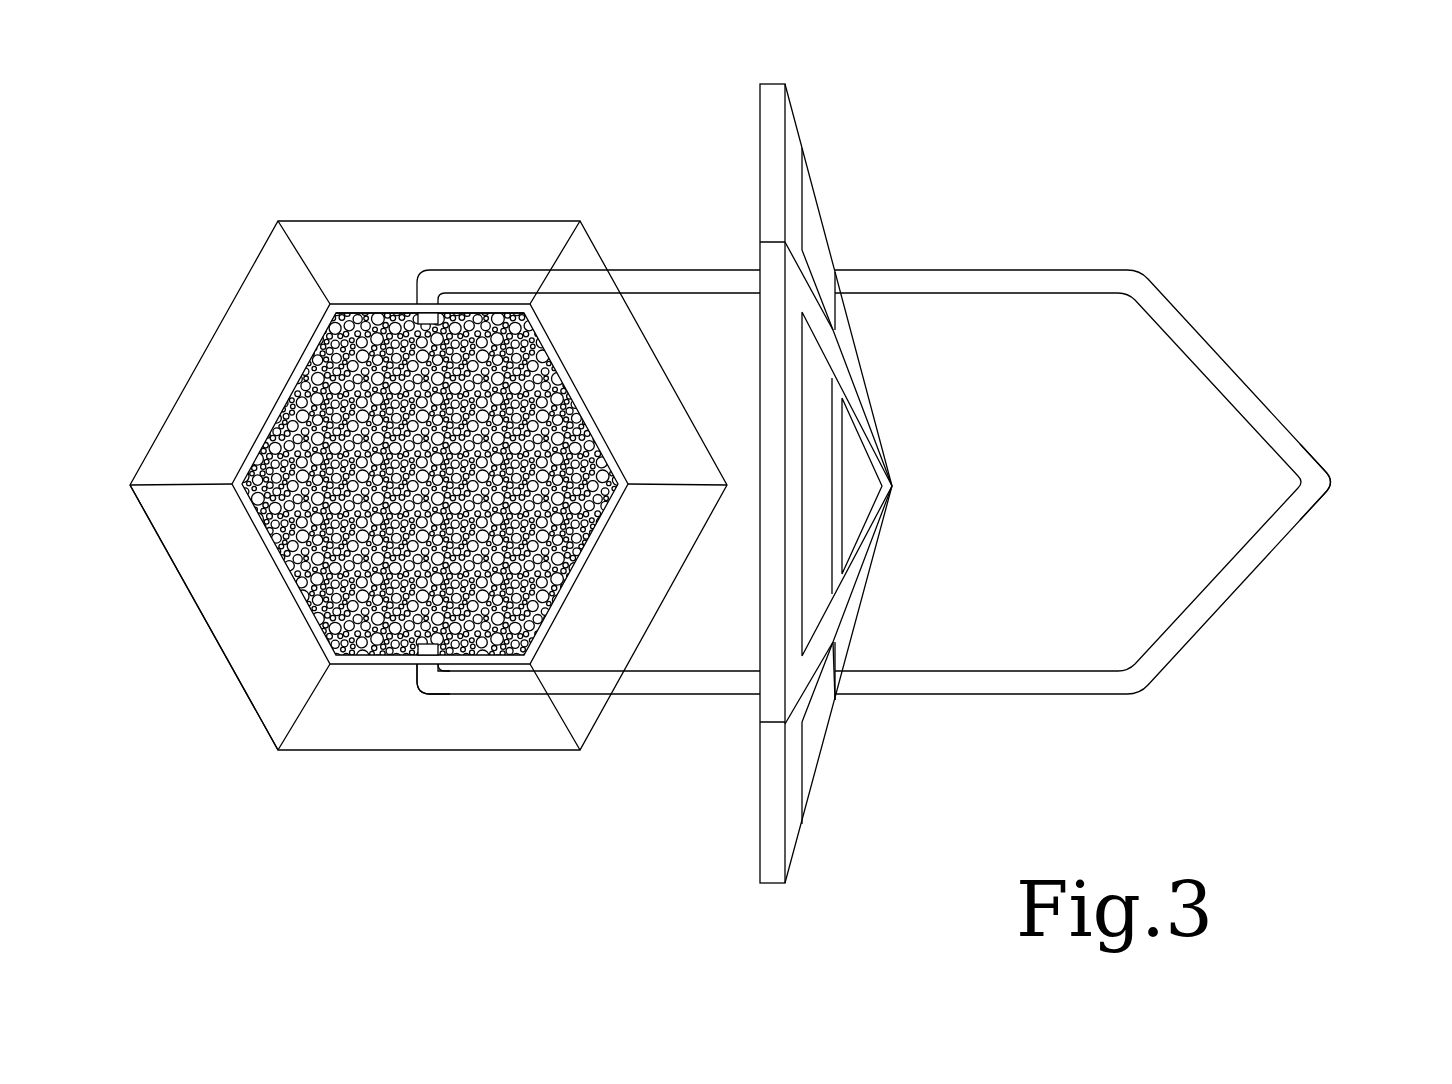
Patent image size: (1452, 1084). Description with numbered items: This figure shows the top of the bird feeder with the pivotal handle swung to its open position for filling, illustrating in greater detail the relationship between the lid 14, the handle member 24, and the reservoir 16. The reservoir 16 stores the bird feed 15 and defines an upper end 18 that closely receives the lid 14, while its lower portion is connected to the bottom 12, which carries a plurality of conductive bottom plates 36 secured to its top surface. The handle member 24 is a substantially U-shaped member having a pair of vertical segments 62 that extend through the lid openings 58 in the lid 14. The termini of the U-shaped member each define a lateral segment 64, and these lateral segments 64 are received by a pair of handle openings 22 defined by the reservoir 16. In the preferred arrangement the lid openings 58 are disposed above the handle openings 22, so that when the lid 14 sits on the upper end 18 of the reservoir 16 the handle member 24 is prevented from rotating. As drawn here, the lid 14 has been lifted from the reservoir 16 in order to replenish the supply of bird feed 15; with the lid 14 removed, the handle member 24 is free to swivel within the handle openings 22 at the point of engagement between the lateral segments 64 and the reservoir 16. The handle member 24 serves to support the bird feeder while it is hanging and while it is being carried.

The bottom 12 is at (458, 752).
The lid 14 is at (775, 885).
The bird feed 15 is at (365, 323).
The reservoir 16 is at (392, 477).
The upper end 18 is at (270, 393).
The handle openings 22 is at (418, 306).
The handle member 24 is at (1340, 466).
The conductive bottom plates 36 is at (285, 672).
The lid openings 58 is at (842, 700).
The vertical segments 62 is at (1222, 608).
The lateral segments 64 is at (430, 668).